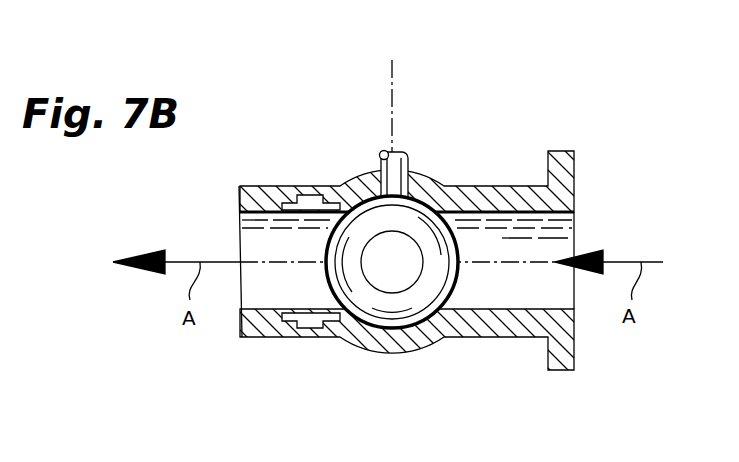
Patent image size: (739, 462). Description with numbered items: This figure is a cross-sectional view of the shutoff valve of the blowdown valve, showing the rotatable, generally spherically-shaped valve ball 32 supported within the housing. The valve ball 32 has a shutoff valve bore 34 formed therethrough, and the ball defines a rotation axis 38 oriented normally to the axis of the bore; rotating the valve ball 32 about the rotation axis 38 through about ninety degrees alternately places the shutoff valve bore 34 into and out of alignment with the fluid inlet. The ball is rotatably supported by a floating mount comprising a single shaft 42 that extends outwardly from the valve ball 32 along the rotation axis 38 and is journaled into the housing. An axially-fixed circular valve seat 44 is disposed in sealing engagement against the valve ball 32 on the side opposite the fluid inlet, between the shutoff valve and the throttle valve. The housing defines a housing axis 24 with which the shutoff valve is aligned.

The housing axis 24 is at (287, 262).
The valve ball 32 is at (440, 247).
The shutoff valve bore 34 is at (417, 237).
The rotation axis 38 is at (391, 70).
The shaft 42 is at (381, 157).
The valve seat 44 is at (347, 203).